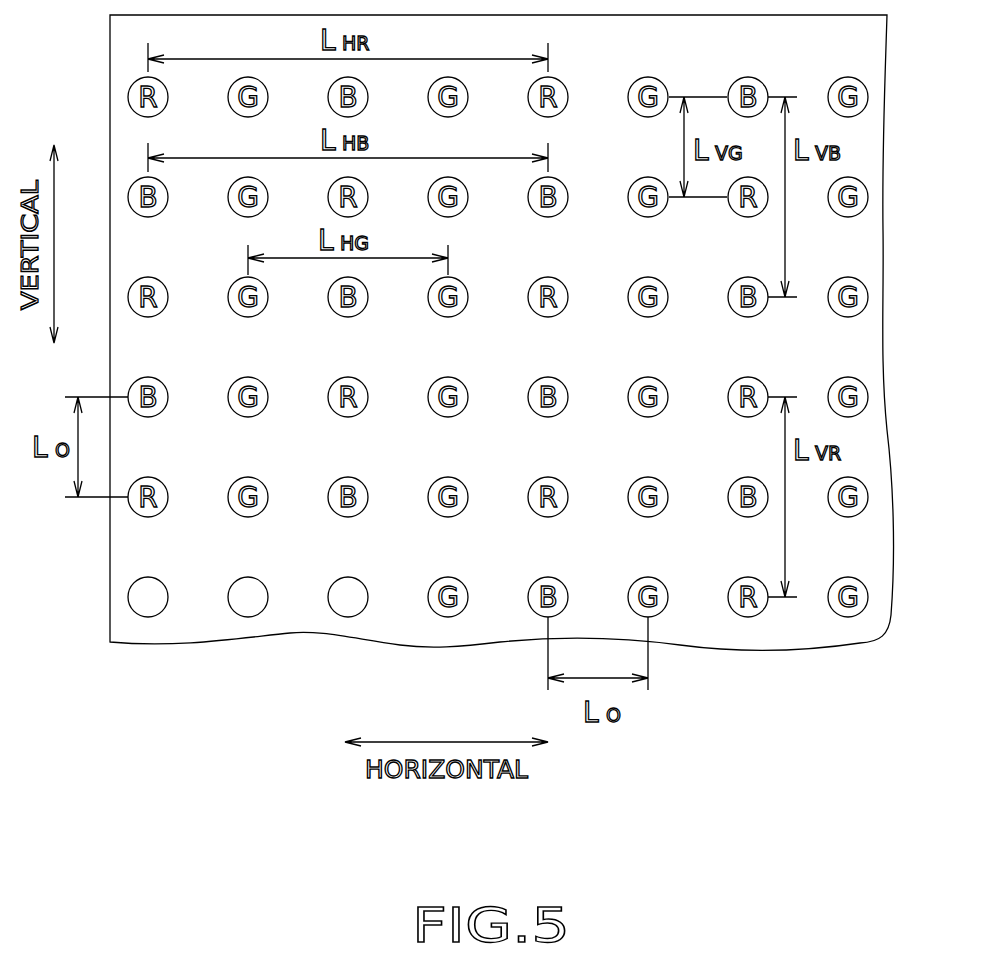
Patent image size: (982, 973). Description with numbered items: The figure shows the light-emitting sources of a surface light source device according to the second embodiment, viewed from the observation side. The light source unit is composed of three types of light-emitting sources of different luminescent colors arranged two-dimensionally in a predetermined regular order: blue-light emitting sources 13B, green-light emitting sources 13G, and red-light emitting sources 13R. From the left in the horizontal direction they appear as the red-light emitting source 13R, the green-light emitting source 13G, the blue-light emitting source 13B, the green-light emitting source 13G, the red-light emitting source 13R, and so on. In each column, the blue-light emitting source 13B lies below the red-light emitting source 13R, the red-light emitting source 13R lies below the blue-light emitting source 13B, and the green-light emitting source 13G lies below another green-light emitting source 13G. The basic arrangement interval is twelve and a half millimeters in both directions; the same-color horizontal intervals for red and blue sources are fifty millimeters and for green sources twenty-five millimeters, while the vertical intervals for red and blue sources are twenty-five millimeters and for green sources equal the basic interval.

The blue-light emitting source 13B is at (148, 617).
The green-light emitting source 13G is at (248, 617).
The red-light emitting source 13R is at (348, 617).